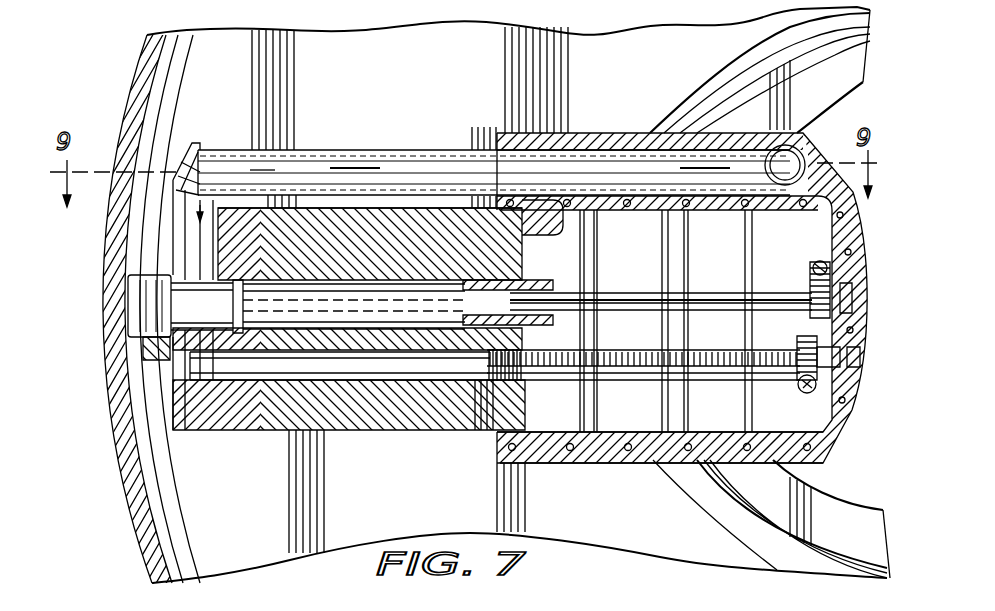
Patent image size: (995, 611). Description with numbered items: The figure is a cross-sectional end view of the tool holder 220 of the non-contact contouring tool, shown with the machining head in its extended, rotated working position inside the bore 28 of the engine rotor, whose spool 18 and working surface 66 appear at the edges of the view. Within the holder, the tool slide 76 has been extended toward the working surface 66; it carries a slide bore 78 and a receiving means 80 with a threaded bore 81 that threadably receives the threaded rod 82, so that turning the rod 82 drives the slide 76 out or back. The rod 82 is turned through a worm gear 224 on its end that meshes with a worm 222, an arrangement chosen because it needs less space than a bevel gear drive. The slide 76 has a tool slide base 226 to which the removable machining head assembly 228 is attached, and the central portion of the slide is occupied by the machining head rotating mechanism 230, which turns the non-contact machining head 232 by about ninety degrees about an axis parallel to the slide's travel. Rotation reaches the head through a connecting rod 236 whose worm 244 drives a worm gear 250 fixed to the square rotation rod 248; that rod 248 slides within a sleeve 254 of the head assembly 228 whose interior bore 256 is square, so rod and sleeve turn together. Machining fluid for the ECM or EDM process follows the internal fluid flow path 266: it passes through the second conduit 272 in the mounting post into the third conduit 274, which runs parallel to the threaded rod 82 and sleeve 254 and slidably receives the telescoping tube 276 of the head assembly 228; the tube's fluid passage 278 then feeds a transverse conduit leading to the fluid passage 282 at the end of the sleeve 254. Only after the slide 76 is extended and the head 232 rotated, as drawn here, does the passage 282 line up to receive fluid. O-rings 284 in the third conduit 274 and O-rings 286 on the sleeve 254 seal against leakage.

The spool 18 is at (147, 52).
The bore 28 is at (830, 490).
The working surface 66 is at (216, 433).
The tool slide 76 is at (410, 439).
The slide bore 78 is at (338, 372).
The receiving means 80 is at (524, 380).
The threaded bore 81 is at (488, 432).
The threaded rod 82 is at (646, 463).
The tool holder 220 is at (618, 470).
The worm 222 is at (823, 428).
The worm gear 224 is at (825, 376).
The tool slide base 226 is at (313, 433).
The machining head assembly 228 is at (140, 520).
The machining head rotating mechanism 230 is at (578, 332).
The non-contact machining head 232 is at (128, 300).
The connecting rod 236 is at (824, 258).
The worm 244 is at (817, 263).
The square rotation rod 248 is at (642, 295).
The worm gear 250 is at (816, 313).
The sleeve 254 is at (467, 428).
The interior bore 256 is at (580, 205).
The machining fluid flow path 266 is at (262, 174).
The second conduit 272 is at (806, 150).
The third conduit 274 is at (648, 132).
The telescoping tube 276 is at (343, 152).
The telescoping tube fluid passage 278 is at (410, 150).
The fluid passage 282 is at (186, 306).
The O-rings 284 is at (527, 140).
The O-rings 286 is at (147, 364).